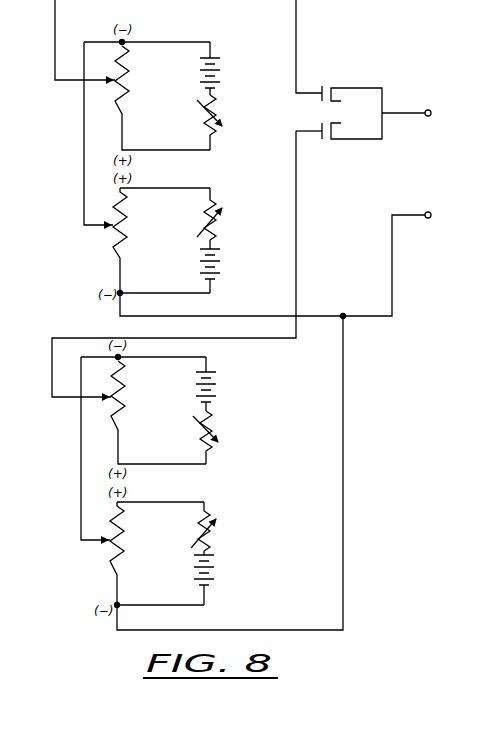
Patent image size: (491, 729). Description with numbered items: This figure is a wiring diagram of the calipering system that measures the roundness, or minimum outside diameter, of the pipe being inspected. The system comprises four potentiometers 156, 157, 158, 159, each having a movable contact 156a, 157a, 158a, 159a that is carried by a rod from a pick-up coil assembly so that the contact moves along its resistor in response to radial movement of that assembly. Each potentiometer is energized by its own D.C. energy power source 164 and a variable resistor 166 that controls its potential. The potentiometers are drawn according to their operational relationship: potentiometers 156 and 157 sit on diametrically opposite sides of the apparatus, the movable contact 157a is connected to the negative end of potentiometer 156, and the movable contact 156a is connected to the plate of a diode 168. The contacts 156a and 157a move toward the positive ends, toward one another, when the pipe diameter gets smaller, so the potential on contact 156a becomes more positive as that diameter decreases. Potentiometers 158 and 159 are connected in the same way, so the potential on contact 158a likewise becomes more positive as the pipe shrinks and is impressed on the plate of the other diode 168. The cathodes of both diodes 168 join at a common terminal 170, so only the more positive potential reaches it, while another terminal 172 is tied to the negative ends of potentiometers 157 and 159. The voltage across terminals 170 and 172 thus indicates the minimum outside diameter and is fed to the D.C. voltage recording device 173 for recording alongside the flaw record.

The potentiometer 156 is at (134, 90).
The movable contact 156a is at (108, 82).
The potentiometer 157 is at (132, 244).
The movable contact 157a is at (108, 226).
The potentiometer 158 is at (130, 412).
The movable contact 158a is at (104, 398).
The potentiometer 159 is at (128, 558).
The movable contact 159a is at (108, 541).
The D.C. energy power source 164 is at (222, 70).
The variable resistor 166 is at (220, 113).
The diode 168 is at (329, 84).
The common terminal 170 is at (430, 109).
The terminal 172 is at (429, 219).
The D.C. voltage recording device 173 is at (440, 172).